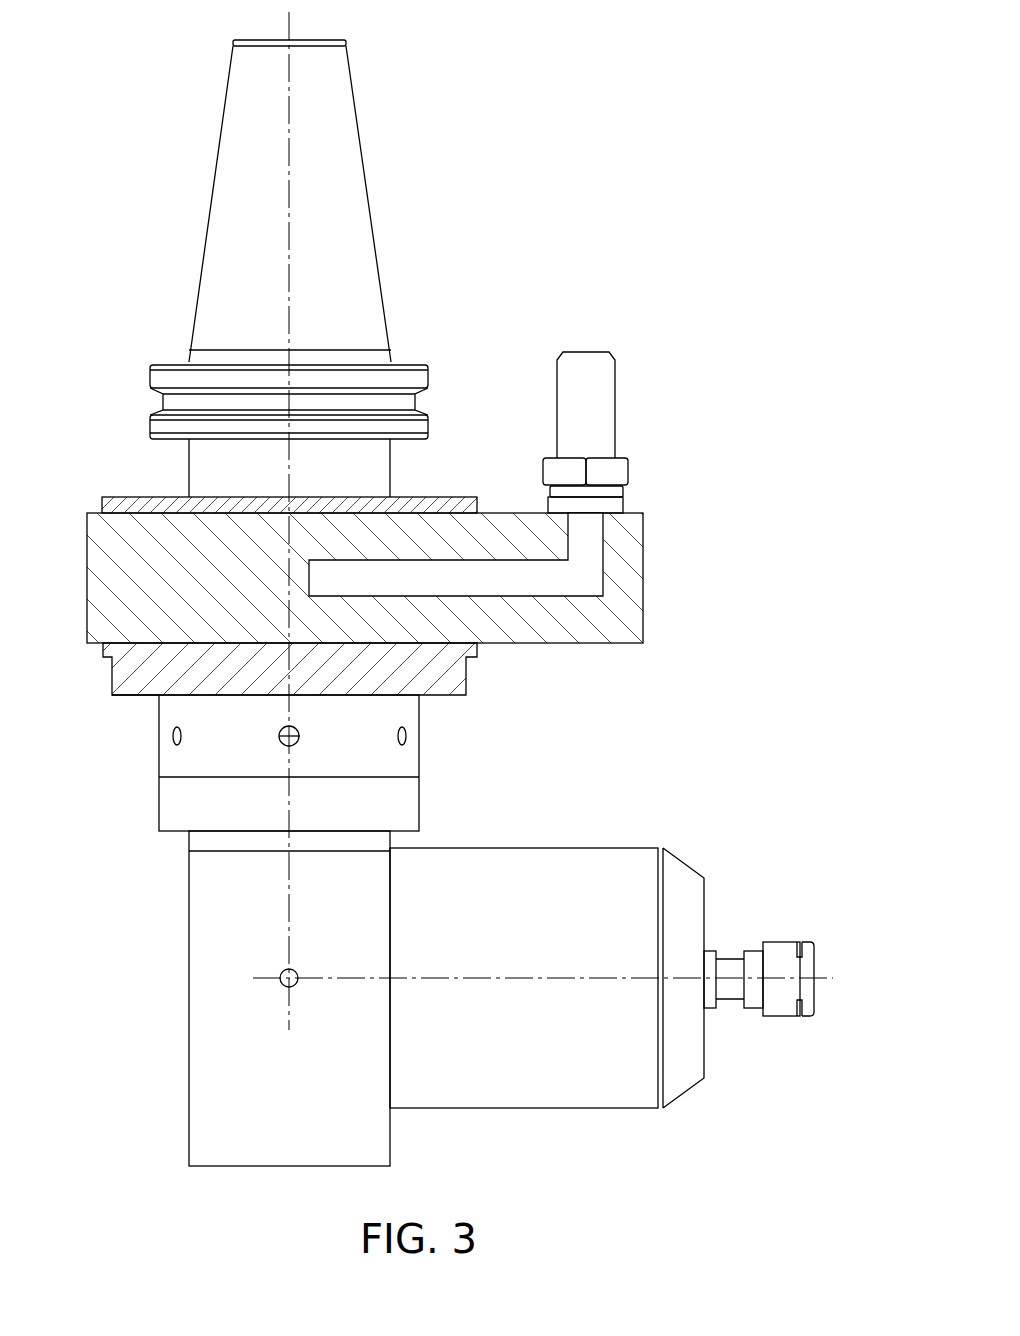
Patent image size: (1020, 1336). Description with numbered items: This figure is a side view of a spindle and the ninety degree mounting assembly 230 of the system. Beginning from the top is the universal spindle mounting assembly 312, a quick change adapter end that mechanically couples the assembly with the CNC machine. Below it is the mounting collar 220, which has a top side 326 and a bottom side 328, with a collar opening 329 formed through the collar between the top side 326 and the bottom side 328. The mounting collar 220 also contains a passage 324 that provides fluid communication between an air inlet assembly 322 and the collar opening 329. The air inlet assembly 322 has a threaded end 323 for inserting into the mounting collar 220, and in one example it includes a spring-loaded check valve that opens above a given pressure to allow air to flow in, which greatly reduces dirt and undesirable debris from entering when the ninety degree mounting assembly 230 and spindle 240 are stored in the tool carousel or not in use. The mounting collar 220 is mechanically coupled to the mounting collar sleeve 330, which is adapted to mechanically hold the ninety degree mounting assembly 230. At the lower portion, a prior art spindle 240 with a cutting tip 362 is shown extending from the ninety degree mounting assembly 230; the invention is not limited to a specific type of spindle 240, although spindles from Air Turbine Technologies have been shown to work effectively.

The universal spindle mounting assembly (USMA) 312 is at (371, 196).
The air inlet assembly 322 is at (617, 408).
The threaded end 323 is at (626, 503).
The mounting collar 220 is at (404, 578).
The passage 324 is at (487, 597).
The top side 326 is at (120, 493).
The bottom side 328 is at (117, 697).
The collar opening 329 is at (135, 697).
The mounting collar sleeve 330 is at (420, 760).
The ninety degree mounting assembly 230 is at (189, 968).
The spindle 240 is at (578, 848).
The cutting tip 362 is at (780, 942).